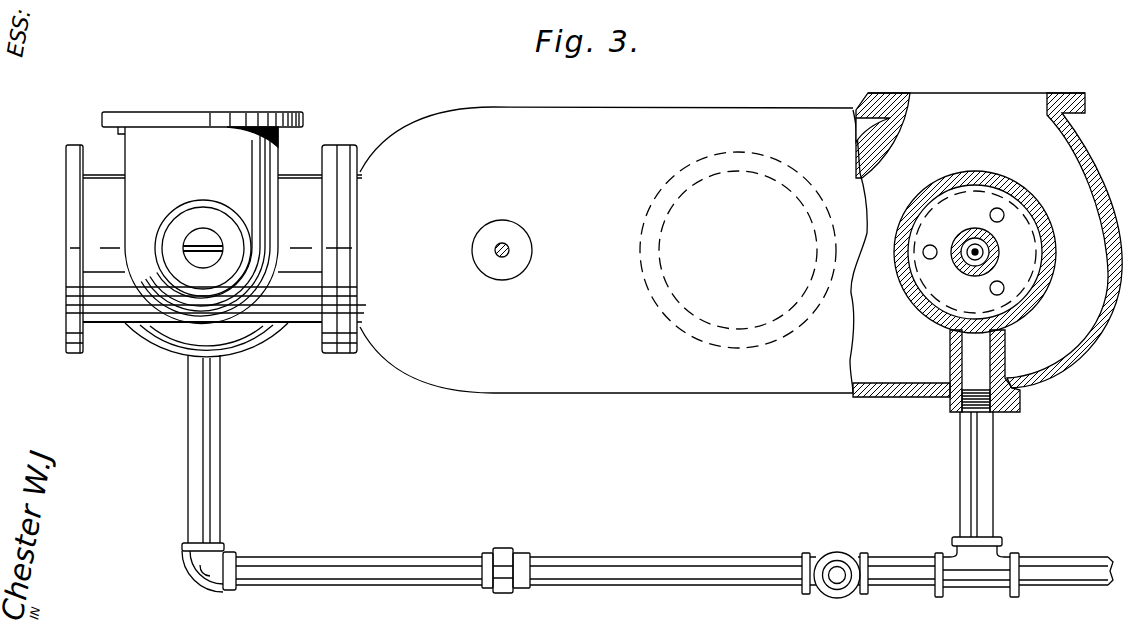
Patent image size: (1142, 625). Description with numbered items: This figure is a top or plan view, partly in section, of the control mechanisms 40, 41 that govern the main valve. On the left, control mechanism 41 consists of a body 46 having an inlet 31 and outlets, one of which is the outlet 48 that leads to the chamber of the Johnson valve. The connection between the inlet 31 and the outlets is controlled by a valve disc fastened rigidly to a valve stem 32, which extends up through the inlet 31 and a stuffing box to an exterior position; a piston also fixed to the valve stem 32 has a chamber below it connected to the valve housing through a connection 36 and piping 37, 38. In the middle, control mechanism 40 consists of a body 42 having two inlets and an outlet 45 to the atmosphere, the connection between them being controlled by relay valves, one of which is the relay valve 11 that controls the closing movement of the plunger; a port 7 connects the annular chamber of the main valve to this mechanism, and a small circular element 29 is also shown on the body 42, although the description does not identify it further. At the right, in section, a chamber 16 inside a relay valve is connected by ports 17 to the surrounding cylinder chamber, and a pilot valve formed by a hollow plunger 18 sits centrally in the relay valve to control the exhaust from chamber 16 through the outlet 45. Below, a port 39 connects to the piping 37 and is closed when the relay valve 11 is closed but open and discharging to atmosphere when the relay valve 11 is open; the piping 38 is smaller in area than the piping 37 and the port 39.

The port 7 is at (997, 102).
The relay valve 11 is at (1049, 282).
The chamber 16 is at (940, 222).
The ports 17 is at (1003, 289).
The hollow plunger 18 is at (966, 258).
The pivot 29 is at (508, 247).
The inlet 31 is at (232, 112).
The valve stem 32 is at (212, 233).
The connection 36 is at (200, 361).
The piping 37 is at (645, 558).
The piping 38 is at (1053, 568).
The port 39 is at (968, 382).
The control mechanism 40 is at (613, 254).
The control mechanism 41 is at (183, 329).
The body 42 is at (753, 113).
The outlet 45 is at (667, 284).
The body 46 is at (145, 192).
The outlet 48 is at (64, 261).